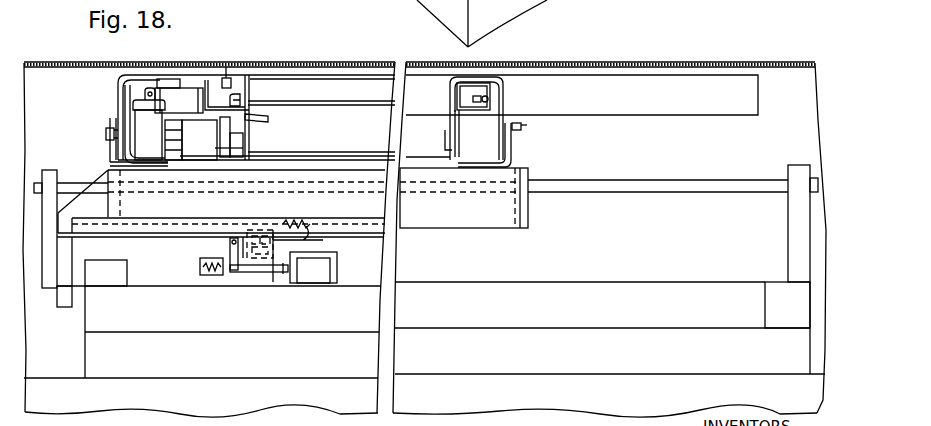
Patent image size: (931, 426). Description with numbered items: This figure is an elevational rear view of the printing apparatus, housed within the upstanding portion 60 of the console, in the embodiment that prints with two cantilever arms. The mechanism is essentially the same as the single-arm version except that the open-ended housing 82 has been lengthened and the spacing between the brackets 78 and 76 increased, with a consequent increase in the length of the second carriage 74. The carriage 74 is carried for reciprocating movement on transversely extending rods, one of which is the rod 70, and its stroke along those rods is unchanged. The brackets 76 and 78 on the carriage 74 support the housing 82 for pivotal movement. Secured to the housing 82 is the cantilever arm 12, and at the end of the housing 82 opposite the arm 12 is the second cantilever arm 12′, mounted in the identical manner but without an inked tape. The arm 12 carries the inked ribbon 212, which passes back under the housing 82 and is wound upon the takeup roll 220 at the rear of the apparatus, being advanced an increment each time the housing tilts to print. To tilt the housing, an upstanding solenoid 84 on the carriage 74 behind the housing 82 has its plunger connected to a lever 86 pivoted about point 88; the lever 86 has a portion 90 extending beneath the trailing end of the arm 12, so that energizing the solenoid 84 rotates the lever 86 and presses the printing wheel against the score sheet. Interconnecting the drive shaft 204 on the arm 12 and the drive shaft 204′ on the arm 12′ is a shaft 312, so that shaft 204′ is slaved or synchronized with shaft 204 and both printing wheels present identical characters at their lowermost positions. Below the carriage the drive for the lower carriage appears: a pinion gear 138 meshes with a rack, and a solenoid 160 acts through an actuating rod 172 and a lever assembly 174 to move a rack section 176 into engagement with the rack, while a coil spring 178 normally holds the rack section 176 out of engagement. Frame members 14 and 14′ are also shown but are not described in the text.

The cantilever arm 12 is at (256, 102).
The second cantilever arm 12' is at (486, 100).
The frame member 14 is at (321, 130).
The second frame member 14' is at (582, 77).
The upstanding portion 60 is at (598, 64).
The rod 70 is at (660, 180).
The second carriage 74 is at (268, 213).
The bracket 76 is at (511, 153).
The bracket 78 is at (108, 143).
The open-ended housing 82 is at (319, 74).
The solenoid 84 is at (142, 117).
The lever 86 is at (188, 92).
The pivot point 88 is at (193, 112).
The lever portion 90 is at (258, 121).
The pinion gear 138 is at (306, 240).
The solenoid 160 is at (314, 274).
The actuating rod 172 is at (258, 273).
The lever assembly 174 is at (230, 248).
The rack section 176 is at (268, 238).
The coil spring 178 is at (222, 275).
The drive shaft 204 is at (260, 93).
The drive shaft 204' is at (510, 94).
The inked ribbon 212 is at (229, 77).
The takeup roll 220 is at (243, 148).
The shaft 312 is at (322, 102).